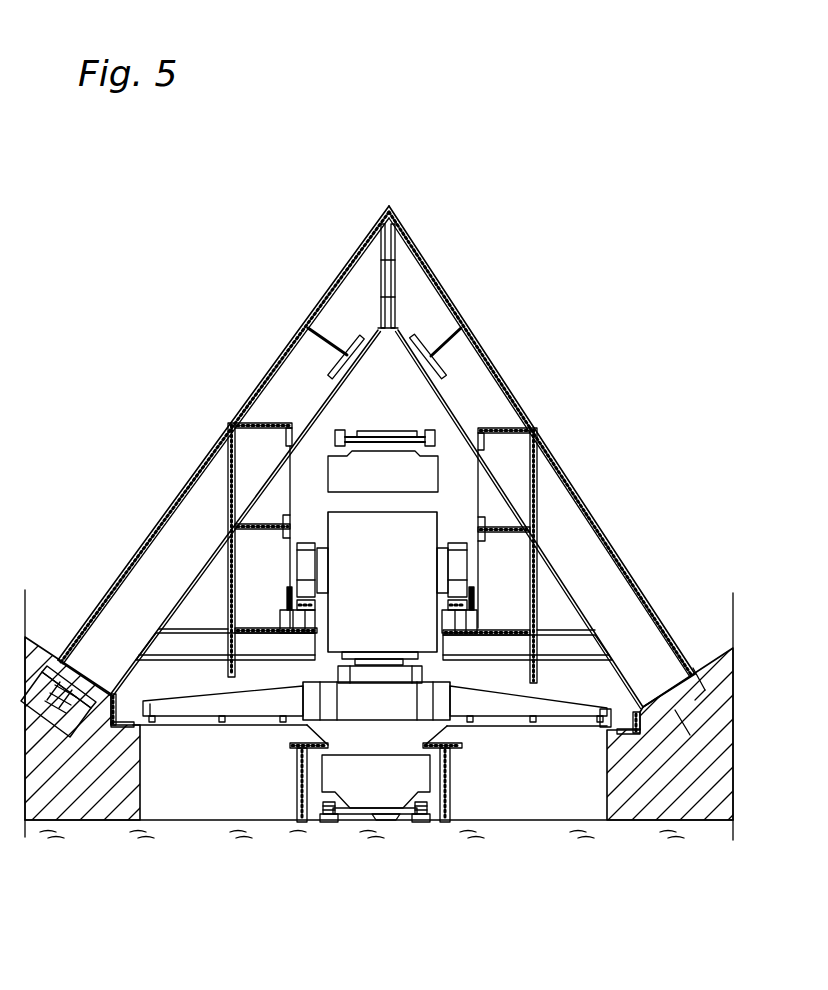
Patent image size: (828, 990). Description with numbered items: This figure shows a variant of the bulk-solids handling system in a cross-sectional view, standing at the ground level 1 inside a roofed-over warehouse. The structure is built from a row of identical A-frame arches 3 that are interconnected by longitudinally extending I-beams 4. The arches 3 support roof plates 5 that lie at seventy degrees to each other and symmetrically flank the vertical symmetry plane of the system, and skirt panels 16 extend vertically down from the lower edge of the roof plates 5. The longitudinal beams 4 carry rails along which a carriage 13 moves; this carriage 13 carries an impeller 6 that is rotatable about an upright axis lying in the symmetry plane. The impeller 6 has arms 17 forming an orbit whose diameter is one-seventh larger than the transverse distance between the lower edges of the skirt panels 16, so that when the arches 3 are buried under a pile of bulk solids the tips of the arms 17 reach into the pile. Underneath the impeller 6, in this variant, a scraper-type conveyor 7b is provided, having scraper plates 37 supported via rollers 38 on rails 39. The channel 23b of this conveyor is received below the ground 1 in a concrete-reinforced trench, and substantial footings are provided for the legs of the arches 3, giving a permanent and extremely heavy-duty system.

The ground level 1 is at (180, 820).
The A-frame arch 3 is at (583, 520).
The I-beam 4 is at (533, 574).
The roof plate 5 is at (433, 282).
The impeller 6 is at (384, 714).
The scraper-type conveyor 7b is at (382, 812).
The carriage 13 is at (400, 603).
The skirt panel 16 is at (228, 490).
The arm 17 is at (212, 707).
The channel 23b is at (439, 825).
The scraper plate 37 is at (433, 499).
The roller 38 is at (337, 430).
The rail 39 is at (329, 822).